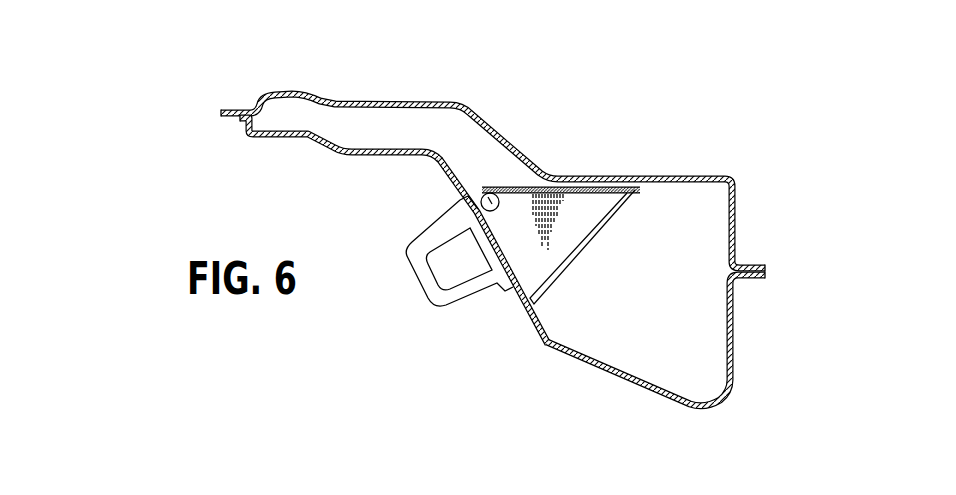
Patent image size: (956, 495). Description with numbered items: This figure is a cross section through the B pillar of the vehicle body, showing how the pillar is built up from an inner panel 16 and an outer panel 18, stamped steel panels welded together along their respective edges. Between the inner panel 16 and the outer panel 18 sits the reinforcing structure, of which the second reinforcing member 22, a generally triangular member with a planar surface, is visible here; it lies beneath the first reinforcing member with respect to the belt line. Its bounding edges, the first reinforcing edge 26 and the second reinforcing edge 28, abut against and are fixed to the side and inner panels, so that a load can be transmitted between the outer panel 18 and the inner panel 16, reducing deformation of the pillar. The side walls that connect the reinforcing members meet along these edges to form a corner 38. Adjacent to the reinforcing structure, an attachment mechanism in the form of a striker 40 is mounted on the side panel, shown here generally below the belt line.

The inner panel 16 is at (696, 173).
The outer panel 18 is at (643, 387).
The second reinforcing member 22 is at (542, 242).
The first reinforcing edge 26 is at (591, 184).
The second reinforcing edge 28 is at (515, 297).
The corner 38 is at (486, 190).
The striker 40 is at (417, 268).